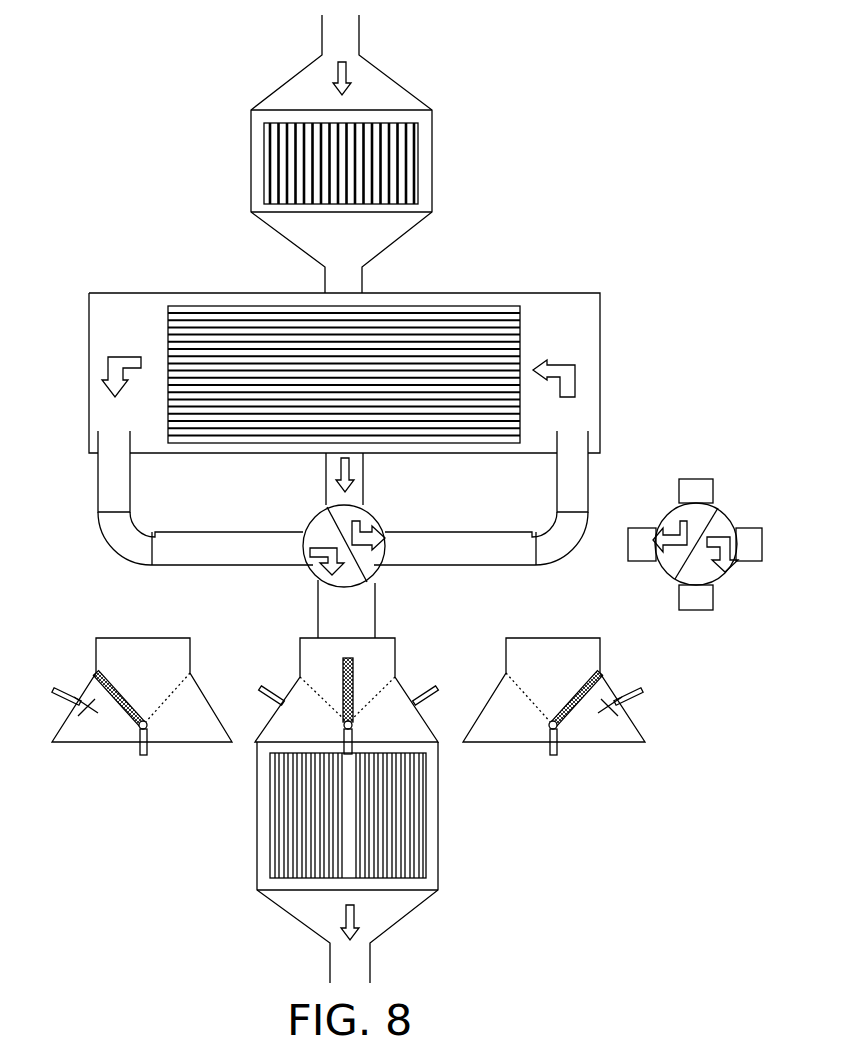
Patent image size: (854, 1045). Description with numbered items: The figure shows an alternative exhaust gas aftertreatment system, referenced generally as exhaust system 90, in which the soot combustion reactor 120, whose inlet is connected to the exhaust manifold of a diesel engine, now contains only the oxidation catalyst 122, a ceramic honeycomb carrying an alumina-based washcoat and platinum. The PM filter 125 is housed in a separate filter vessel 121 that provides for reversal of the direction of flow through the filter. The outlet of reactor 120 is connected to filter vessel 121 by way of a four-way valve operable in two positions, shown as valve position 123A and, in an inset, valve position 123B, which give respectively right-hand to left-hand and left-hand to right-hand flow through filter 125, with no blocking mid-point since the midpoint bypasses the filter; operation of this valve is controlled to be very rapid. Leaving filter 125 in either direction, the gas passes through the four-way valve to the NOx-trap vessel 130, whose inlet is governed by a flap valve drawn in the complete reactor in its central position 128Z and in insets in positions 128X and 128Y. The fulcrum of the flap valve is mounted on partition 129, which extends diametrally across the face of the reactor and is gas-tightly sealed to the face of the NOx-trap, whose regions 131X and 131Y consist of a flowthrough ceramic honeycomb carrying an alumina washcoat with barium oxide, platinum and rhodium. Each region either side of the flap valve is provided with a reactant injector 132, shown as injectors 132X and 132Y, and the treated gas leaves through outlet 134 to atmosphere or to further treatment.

The exhaust system 90 is at (571, 139).
The soot combustion reactor 120 is at (397, 77).
The oxidation catalyst 122 is at (418, 155).
The filter vessel 121 is at (602, 367).
The PM filter 125 is at (461, 297).
The 4-way valve position A 123A is at (378, 513).
The 4-way valve position B 123B is at (756, 498).
The flap valve position X 128X is at (140, 638).
The flap valve position Y 128Y is at (548, 638).
The flap valve central position Z 128Z is at (304, 638).
The reactant injector X 132X is at (55, 688).
The reactant injector Y 132Y is at (640, 688).
The reactant injector 132 is at (262, 688).
The partition 129 is at (138, 750).
The NOx-trap vessel 130 is at (426, 858).
The NOx-trap region X 131X is at (298, 808).
The NOx-trap region Y 131Y is at (398, 810).
The outlet 134 is at (370, 960).